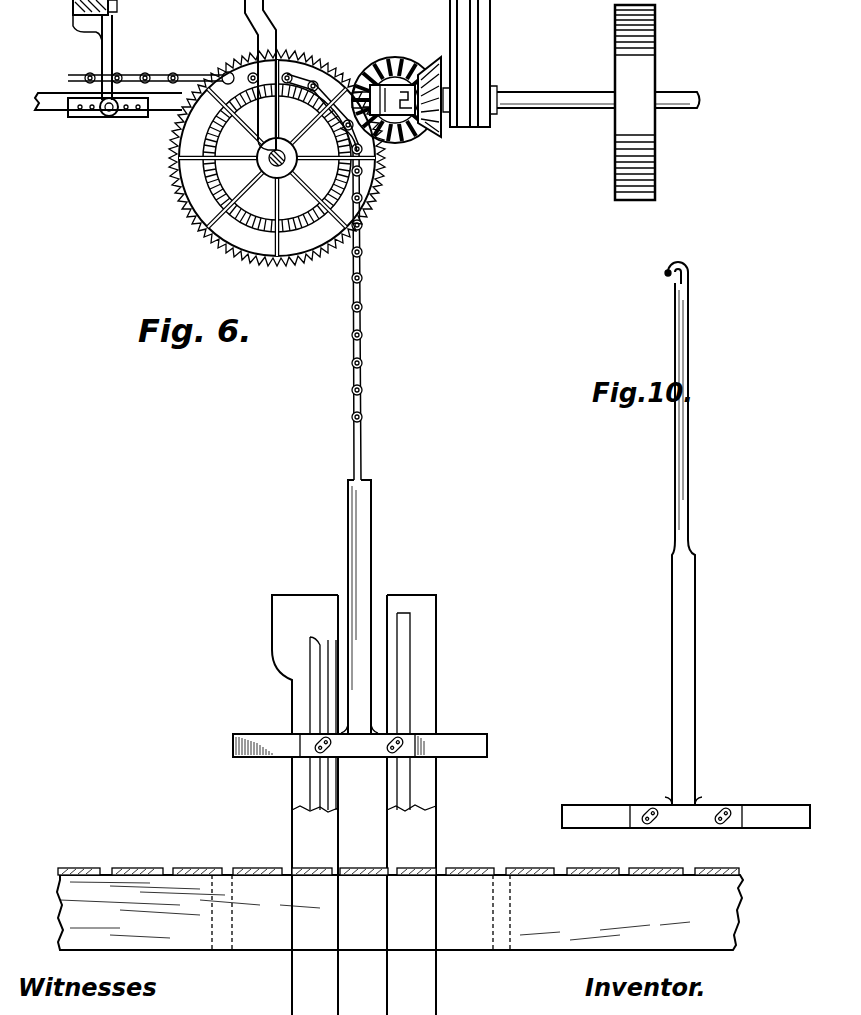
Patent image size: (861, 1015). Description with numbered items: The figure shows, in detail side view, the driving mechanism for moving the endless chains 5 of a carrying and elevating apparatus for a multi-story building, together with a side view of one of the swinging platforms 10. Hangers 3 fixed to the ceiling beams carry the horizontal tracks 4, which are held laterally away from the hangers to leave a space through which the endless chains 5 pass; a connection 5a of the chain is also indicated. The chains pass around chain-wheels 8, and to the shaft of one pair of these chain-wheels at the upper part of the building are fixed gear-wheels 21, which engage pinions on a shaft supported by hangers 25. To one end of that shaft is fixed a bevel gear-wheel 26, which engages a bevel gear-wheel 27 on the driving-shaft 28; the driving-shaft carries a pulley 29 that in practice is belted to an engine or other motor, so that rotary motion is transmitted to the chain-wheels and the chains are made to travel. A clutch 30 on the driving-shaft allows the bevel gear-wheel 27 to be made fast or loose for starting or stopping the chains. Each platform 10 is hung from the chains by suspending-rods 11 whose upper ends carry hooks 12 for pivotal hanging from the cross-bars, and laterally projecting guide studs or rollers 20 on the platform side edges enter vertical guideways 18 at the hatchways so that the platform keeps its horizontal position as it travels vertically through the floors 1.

In FIG. 6, the floors 1 is at (400, 897).
In FIG. 6, the hangers 3 is at (98, 50).
In FIG. 6, the horizontal tracks 4 is at (62, 123).
In FIG. 6, the endless chains 5 is at (215, 267).
In FIG. 6, the chain connection 5a is at (331, 185).
In FIG. 6, the chain-wheels 8 is at (305, 805).
In FIG. 6, the platforms 10 is at (360, 738).
In FIG. 10, the platforms 10 is at (686, 808).
In FIG. 10, the suspending-rod 11 is at (693, 544).
In FIG. 10, the hooks 12 is at (692, 273).
In FIG. 6, the vertical guideways 18 is at (430, 660).
In FIG. 6, the guide studs or rollers 20 is at (312, 740).
In FIG. 10, the guide studs or rollers 20 is at (689, 806).
In FIG. 6, the gear-wheels 21 is at (277, 153).
In FIG. 6, the hangers 25 is at (270, 75).
In FIG. 6, the bevel gear-wheel 26 is at (395, 92).
In FIG. 6, the bevel gear-wheel 27 is at (434, 84).
In FIG. 6, the driving-shaft 28 is at (598, 89).
In FIG. 6, the pulley 29 is at (646, 102).
In FIG. 6, the clutch 30 is at (405, 92).